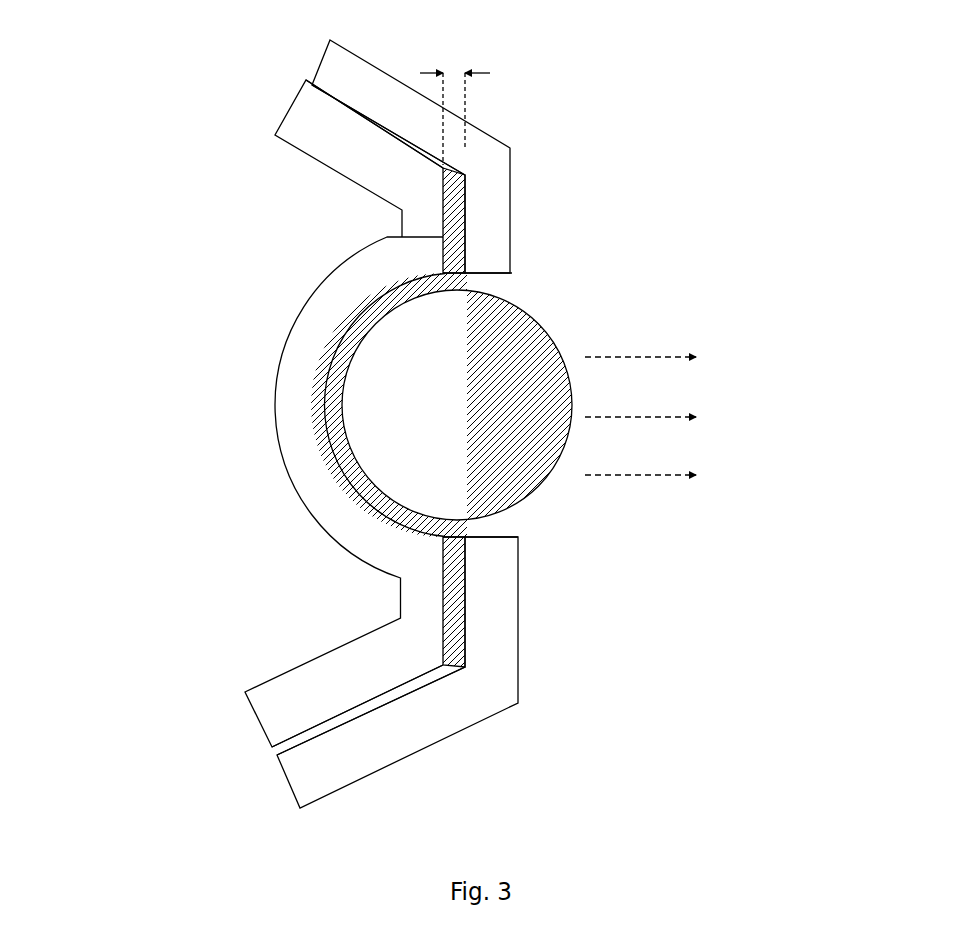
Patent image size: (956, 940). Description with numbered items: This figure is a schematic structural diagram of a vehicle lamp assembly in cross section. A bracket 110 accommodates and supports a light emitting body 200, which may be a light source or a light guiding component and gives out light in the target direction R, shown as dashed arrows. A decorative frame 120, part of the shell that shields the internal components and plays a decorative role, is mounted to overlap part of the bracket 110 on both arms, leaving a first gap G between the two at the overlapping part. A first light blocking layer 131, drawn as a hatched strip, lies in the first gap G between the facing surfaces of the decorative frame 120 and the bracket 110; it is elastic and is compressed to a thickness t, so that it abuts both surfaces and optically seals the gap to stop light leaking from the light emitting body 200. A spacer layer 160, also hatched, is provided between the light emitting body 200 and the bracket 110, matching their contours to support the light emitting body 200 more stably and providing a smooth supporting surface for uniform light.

The bracket 110 is at (350, 510).
The decorative frame 120 is at (483, 650).
The first light blocking layer 131 is at (443, 237).
The spacer layer 160 is at (327, 410).
The light emitting body 200 is at (520, 443).
The first gap G is at (315, 85).
The thickness after compression t is at (455, 104).
The target direction R is at (658, 416).